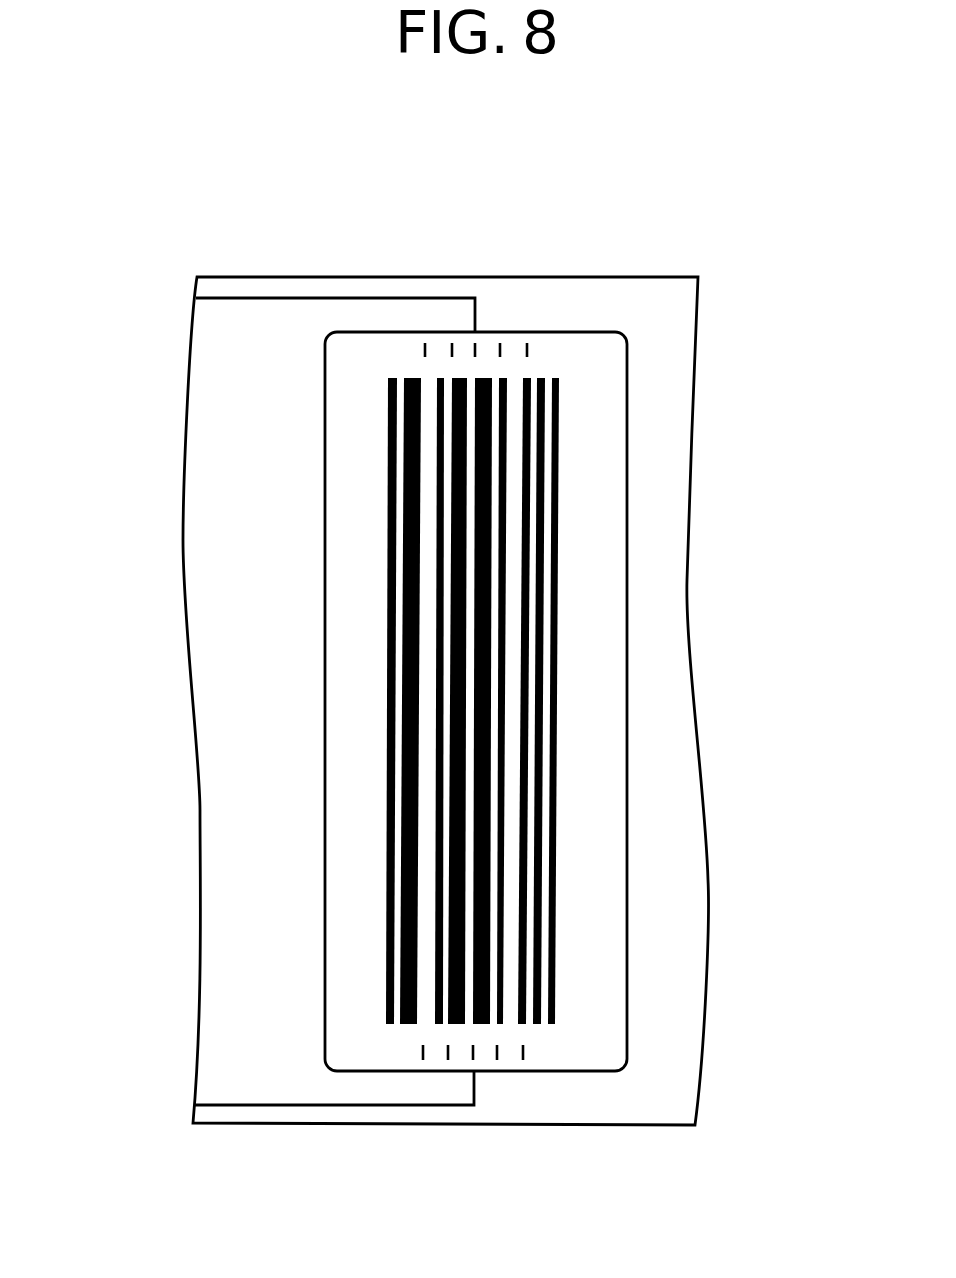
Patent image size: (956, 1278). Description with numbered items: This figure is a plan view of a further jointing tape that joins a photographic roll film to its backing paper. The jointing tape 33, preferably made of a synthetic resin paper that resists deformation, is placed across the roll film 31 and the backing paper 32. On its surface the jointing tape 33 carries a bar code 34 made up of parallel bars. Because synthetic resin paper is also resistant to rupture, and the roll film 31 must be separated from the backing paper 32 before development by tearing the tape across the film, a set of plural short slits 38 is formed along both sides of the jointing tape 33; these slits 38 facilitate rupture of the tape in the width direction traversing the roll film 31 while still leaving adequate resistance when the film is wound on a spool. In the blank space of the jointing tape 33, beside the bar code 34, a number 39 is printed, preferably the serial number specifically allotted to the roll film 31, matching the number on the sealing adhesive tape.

The roll film 31 is at (231, 436).
The backing paper 32 is at (582, 308).
The jointing tape 33 is at (361, 758).
The bar code 34 is at (562, 846).
The short slits 38 is at (451, 352).
The number 39 is at (330, 541).